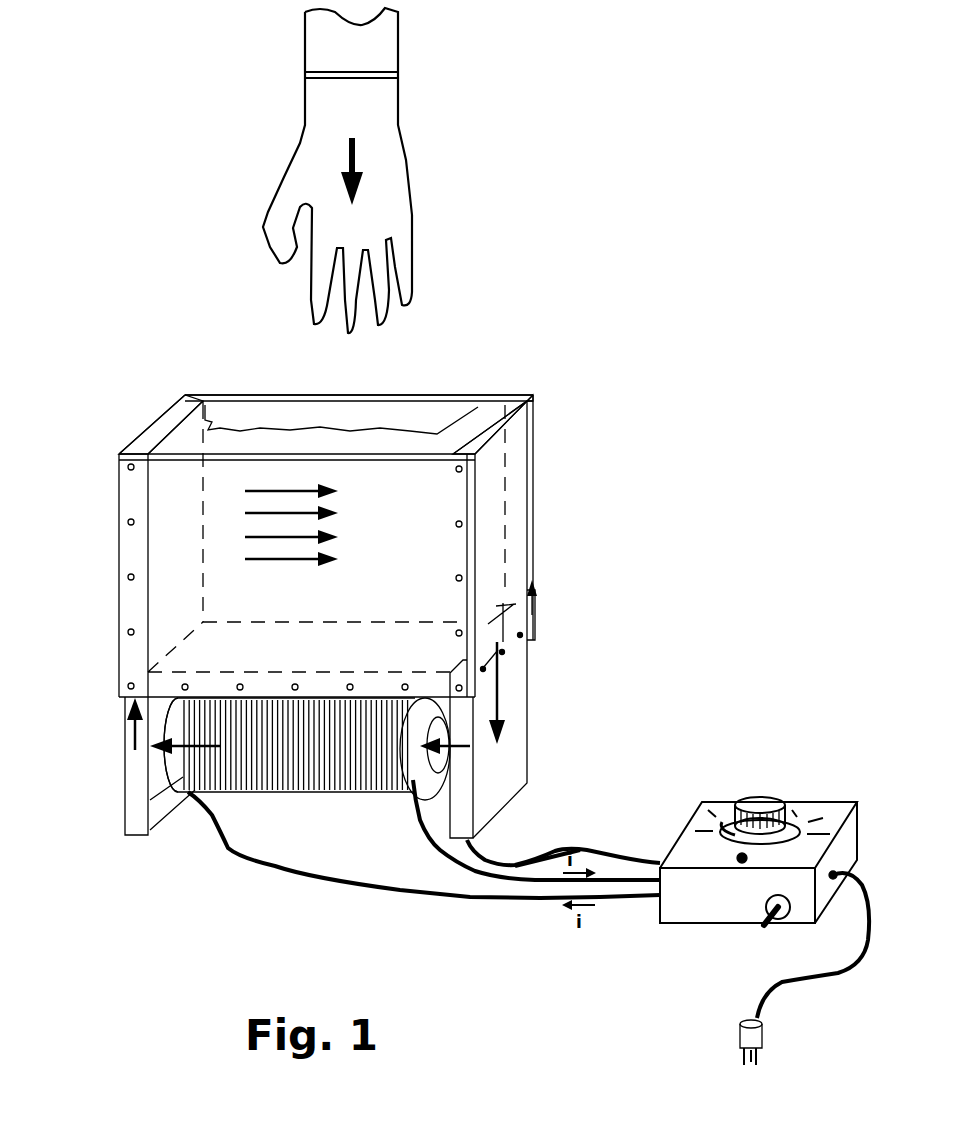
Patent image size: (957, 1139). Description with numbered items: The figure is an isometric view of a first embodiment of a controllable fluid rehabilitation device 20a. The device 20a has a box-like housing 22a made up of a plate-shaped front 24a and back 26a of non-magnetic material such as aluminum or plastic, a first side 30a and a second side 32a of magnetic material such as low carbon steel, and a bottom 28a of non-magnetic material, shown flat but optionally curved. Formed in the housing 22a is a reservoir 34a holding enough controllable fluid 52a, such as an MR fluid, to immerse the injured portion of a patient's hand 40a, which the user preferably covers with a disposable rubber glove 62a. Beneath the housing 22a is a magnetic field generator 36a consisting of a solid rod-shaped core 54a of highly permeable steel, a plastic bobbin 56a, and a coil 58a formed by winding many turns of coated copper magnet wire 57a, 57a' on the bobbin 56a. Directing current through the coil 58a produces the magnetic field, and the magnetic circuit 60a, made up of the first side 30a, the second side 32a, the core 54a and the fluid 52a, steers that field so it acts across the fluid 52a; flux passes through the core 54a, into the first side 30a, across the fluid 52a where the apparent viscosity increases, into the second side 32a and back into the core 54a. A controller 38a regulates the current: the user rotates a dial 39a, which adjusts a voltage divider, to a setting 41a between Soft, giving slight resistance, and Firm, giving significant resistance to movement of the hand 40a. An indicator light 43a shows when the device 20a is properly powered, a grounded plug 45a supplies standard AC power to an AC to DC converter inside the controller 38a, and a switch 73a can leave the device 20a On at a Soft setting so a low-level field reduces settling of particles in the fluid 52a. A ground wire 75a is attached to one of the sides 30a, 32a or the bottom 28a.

The controllable fluid rehabilitation device 20a is at (362, 589).
The housing 22a is at (140, 412).
The front 24a is at (140, 545).
The back 26a is at (383, 393).
The bottom 28a is at (549, 608).
The first side 30a is at (120, 773).
The second side 32a is at (513, 658).
The reservoir 34a is at (297, 412).
The magnetic field generator 36a is at (239, 812).
The controller 38a is at (741, 849).
The dial 39a is at (745, 803).
The hand 40a is at (337, 170).
The setting 41a is at (718, 825).
The indicator light 43a is at (735, 866).
The grounded plug 45a is at (762, 1038).
The controllable fluid 52a is at (467, 406).
The core 54a is at (440, 767).
The bobbin 56a is at (150, 810).
The magnet wire 57a is at (424, 870).
The magnet wire 57a' is at (519, 872).
The coil 58a is at (307, 749).
The magnetic circuit 60a is at (540, 584).
The glove 62a is at (385, 75).
The switch 73a is at (772, 918).
The ground wire 75a is at (567, 847).